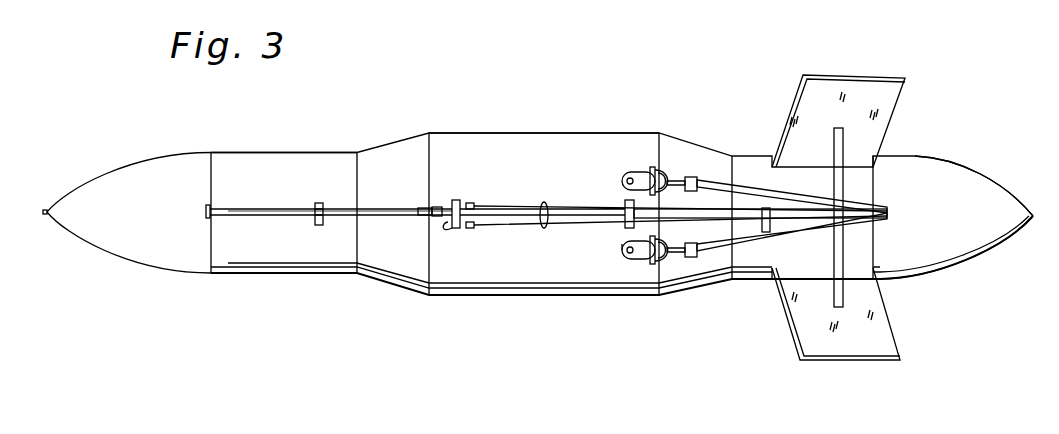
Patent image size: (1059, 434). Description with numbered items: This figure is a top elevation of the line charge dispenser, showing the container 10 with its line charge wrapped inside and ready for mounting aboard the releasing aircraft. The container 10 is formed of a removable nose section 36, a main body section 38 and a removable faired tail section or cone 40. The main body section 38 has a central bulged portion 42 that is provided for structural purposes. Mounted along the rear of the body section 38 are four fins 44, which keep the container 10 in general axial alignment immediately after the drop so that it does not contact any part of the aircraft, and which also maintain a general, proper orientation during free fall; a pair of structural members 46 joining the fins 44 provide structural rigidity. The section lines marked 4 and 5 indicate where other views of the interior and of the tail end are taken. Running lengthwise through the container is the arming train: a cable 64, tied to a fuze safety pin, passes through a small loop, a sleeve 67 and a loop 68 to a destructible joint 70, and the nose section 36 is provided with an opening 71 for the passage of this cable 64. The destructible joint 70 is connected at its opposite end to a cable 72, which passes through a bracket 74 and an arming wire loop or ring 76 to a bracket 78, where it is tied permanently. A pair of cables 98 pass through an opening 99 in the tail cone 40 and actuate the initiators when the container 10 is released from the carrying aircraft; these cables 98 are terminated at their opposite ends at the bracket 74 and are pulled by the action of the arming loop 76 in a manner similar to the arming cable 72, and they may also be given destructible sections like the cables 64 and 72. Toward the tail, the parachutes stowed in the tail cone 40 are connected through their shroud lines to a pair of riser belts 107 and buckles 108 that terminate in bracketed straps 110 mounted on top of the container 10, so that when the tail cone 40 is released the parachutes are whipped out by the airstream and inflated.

The section line 4- 4 is at (43, 212).
The section line 5- 5 is at (875, 157).
The container 10 is at (400, 289).
The nose section 36 is at (153, 157).
The main body section 38 is at (275, 155).
The faired tail section 40 is at (958, 172).
The central bulged portion 42 is at (512, 137).
The fins 44 is at (862, 84).
The structural members 46 is at (845, 196).
The cable 64 is at (427, 211).
The sleeve 67 is at (280, 216).
The loop 68 is at (318, 228).
The destructible joint 70 is at (436, 213).
The opening 71 is at (205, 212).
The cable 72 is at (455, 200).
The bracket 74 is at (452, 229).
The arming wire loop 76 is at (545, 205).
The bracket 78 is at (622, 245).
The cables 98 is at (499, 223).
The opening 99 is at (888, 214).
The riser belts 107 is at (750, 192).
The buckles 108 is at (673, 166).
The bracketed straps 110 is at (636, 172).